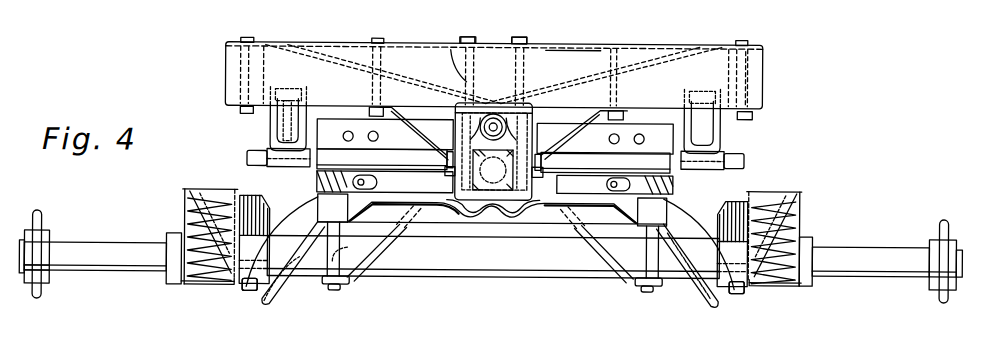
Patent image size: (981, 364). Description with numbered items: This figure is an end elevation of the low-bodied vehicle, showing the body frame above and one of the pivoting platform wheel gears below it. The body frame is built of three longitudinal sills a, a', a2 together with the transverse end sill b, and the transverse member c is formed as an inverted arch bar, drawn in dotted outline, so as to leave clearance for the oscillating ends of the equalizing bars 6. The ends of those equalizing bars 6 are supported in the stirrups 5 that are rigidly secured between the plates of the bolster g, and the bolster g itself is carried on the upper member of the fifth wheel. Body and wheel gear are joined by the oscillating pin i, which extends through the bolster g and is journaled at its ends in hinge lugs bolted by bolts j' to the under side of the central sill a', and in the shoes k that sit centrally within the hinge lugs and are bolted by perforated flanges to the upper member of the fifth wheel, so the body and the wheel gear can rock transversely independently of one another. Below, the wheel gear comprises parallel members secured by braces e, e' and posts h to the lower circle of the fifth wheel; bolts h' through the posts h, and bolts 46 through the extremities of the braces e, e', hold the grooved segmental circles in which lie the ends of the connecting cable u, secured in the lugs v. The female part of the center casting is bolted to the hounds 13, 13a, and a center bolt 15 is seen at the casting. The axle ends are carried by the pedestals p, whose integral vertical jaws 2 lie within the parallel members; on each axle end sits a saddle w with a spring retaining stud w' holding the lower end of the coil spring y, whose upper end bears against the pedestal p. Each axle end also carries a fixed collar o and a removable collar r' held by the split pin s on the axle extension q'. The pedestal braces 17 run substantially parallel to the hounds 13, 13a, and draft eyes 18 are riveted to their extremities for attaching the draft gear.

The longitudinal sill a is at (474, 170).
The bolt j' is at (455, 30).
The central sill a' is at (518, 34).
The transverse end sill b is at (573, 67).
The longitudinal sill a2 is at (744, 84).
The transverse member c is at (445, 69).
The equalizing bar 6 is at (283, 123).
The stirrup 5 is at (310, 130).
The bolster g is at (645, 133).
The lug v is at (493, 207).
The spring retaining stud w' is at (511, 191).
The shoe k is at (494, 138).
The oscillating pin i is at (508, 114).
The center bolt 15 is at (493, 186).
The hound 13a is at (547, 207).
The hound 13 is at (414, 209).
The connecting cable u is at (492, 243).
The jaw 2 is at (733, 195).
The pedestal p is at (492, 227).
The coil spring y is at (197, 228).
The saddle w is at (491, 306).
The fixed collar o is at (173, 288).
The rod q' is at (477, 263).
The coupling r' is at (491, 262).
The split pin s is at (487, 246).
The draft eye 18 is at (318, 202).
The post h is at (490, 272).
The bolt h' is at (485, 289).
The brace e is at (384, 259).
The brace e' is at (596, 261).
The pedestal brace 17 is at (292, 292).
The bolt 46 is at (250, 294).